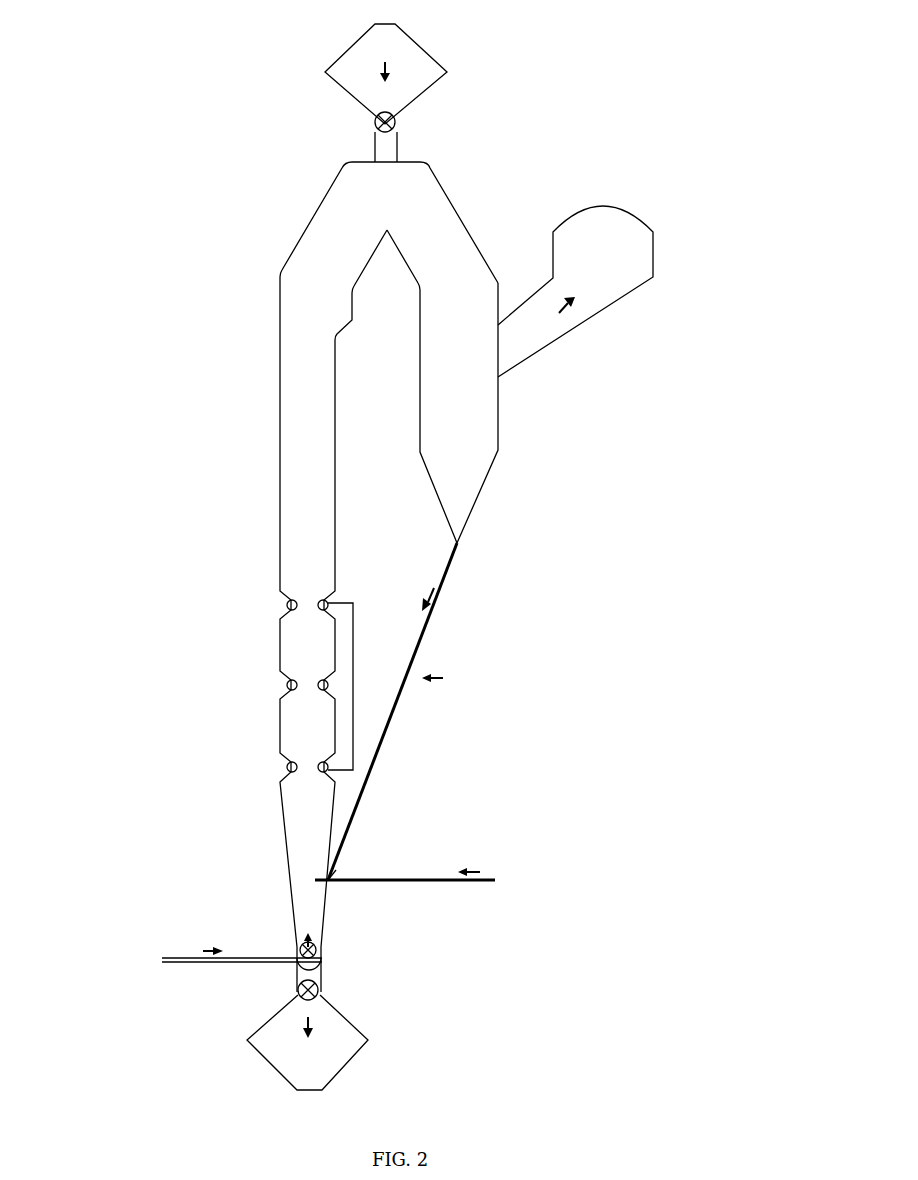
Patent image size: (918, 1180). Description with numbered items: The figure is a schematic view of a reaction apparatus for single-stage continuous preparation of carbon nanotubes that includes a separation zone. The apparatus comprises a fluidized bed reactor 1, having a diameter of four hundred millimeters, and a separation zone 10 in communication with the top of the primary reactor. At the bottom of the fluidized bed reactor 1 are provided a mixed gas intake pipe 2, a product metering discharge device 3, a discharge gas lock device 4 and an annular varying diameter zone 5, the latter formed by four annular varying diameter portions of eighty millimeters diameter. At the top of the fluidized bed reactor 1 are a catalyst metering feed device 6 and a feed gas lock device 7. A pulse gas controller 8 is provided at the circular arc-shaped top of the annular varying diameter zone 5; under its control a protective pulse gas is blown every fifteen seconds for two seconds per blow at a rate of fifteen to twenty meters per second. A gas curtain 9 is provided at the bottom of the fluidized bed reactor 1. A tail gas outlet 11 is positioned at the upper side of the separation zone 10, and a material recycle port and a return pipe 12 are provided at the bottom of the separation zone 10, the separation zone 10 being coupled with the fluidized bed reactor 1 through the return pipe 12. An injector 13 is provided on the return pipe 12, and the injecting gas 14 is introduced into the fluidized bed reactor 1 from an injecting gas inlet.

The fluidized bed reactor 1 is at (310, 454).
The mixed gas intake pipe 2 is at (227, 963).
The product metering discharge device 3 is at (318, 987).
The discharge gas lock device 4 is at (357, 1053).
The annular varying diameter zone 5 is at (252, 753).
The catalyst metering feed device 6 is at (375, 123).
The feed gas lock device 7 is at (443, 80).
The pulse gas controller 8 is at (328, 686).
The gas curtain 9 is at (205, 949).
The separation zone 10 is at (487, 428).
The tail gas outlet 11 is at (638, 267).
The return pipe 12 is at (425, 635).
The injector 13 is at (328, 880).
The injecting gas 14 is at (422, 885).